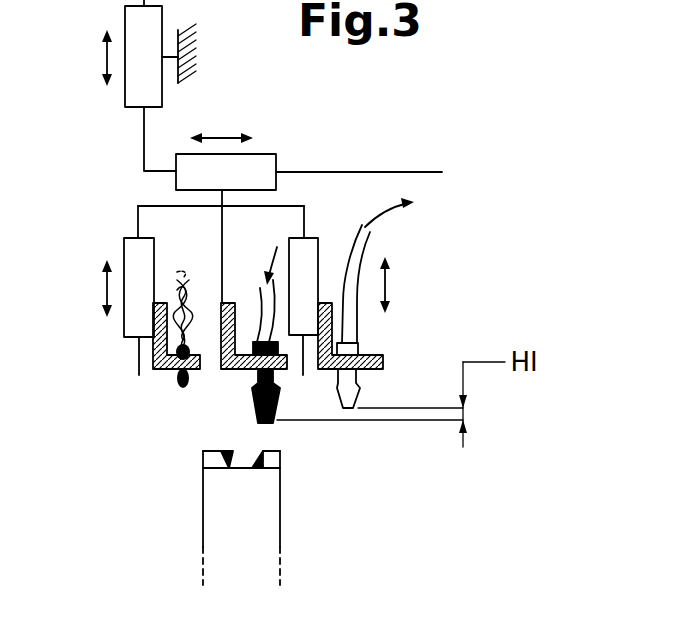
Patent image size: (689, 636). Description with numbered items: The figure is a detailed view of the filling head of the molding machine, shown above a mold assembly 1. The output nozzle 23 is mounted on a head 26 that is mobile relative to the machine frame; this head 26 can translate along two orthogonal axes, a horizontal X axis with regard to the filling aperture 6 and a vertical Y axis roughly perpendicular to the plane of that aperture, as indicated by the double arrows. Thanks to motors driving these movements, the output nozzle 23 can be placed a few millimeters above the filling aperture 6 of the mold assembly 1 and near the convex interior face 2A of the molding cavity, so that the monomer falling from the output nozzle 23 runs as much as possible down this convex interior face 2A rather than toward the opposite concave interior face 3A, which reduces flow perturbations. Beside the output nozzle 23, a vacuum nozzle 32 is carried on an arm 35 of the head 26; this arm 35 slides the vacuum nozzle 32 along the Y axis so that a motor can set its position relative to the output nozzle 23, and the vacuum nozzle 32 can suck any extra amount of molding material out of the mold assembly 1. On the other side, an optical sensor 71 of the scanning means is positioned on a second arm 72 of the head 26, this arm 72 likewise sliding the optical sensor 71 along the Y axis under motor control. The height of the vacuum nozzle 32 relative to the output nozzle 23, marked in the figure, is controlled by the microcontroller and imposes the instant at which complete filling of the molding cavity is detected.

The mold assembly 1 is at (292, 510).
The convex interior face 2A is at (262, 460).
The concave interior face 3A is at (236, 470).
The filling aperture 6 is at (226, 452).
The output nozzle 23 is at (275, 400).
The head 26 is at (153, 205).
The vacuum nozzle 32 is at (357, 395).
The arm 35 is at (383, 362).
The optical sensor 71 is at (178, 387).
The arm 72 is at (162, 370).